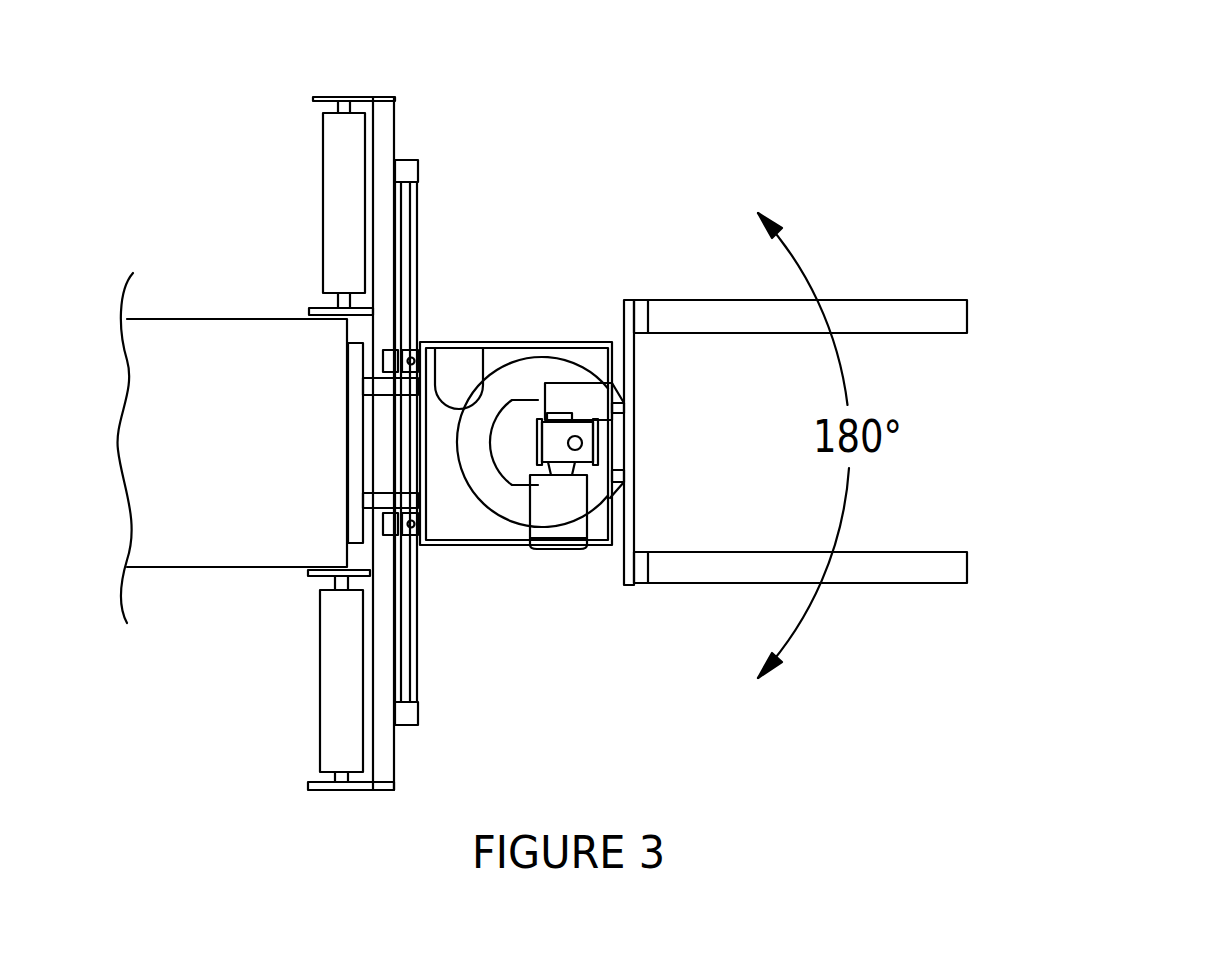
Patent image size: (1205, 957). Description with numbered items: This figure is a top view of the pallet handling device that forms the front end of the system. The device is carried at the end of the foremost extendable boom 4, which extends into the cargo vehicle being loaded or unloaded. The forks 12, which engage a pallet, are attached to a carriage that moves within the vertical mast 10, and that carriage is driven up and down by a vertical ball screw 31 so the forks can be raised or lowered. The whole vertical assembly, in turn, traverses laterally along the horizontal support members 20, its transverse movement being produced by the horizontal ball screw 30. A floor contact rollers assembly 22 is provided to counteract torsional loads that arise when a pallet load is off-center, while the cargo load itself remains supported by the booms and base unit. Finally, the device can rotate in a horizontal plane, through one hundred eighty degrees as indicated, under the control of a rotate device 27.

The foremost extendable boom 4 is at (292, 530).
The vertical mast 10 is at (568, 392).
The forks 12 is at (892, 442).
The horizontal support members 20 is at (381, 177).
The floor contact rollers assembly 22 is at (313, 308).
The rotate device 27 is at (465, 373).
The horizontal ball screw 30 is at (402, 648).
The vertical ball screw 31 is at (578, 438).